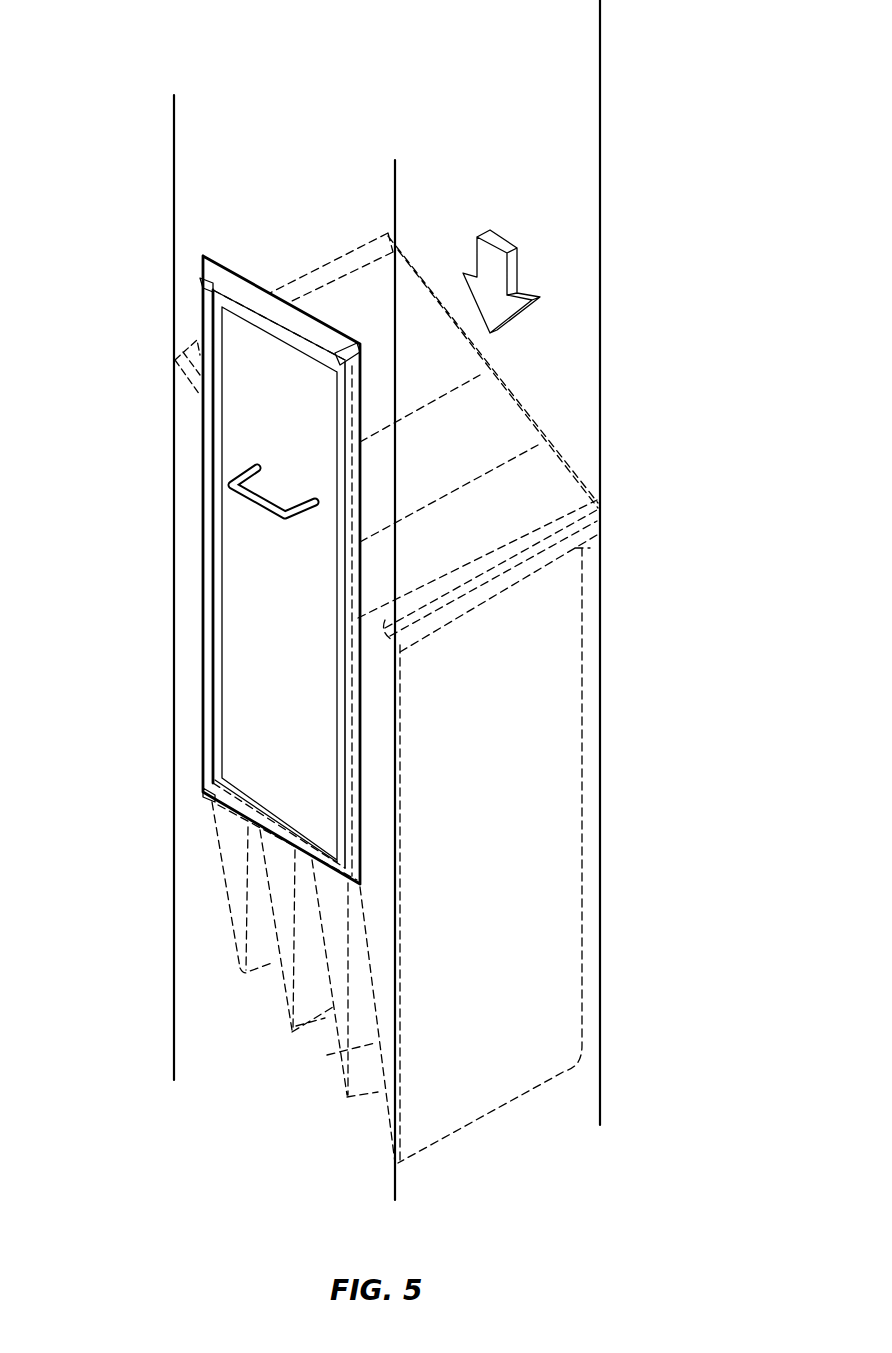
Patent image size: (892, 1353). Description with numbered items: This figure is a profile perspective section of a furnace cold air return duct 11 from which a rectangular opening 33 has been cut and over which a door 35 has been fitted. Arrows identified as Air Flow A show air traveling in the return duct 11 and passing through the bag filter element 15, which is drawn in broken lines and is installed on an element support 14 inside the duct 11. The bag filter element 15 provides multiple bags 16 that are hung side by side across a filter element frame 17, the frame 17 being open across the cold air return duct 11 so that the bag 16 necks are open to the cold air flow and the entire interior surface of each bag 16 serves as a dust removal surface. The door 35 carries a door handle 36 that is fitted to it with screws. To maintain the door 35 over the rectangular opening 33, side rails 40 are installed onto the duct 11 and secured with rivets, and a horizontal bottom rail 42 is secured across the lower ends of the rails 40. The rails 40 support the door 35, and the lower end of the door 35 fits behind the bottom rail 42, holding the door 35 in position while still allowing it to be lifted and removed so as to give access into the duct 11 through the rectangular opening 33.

The cold air return duct 11 is at (585, 1090).
The element support 14 is at (427, 632).
The bag filter element 15 is at (530, 382).
The bags 16 is at (373, 1043).
The filter element frame 17 is at (567, 460).
The rectangular opening 33 is at (353, 823).
The door 35 is at (267, 658).
The door handle 36 is at (262, 495).
The door frame rails 40 is at (203, 702).
The bottom door frame rail 42 is at (213, 798).
The air flow A is at (503, 278).